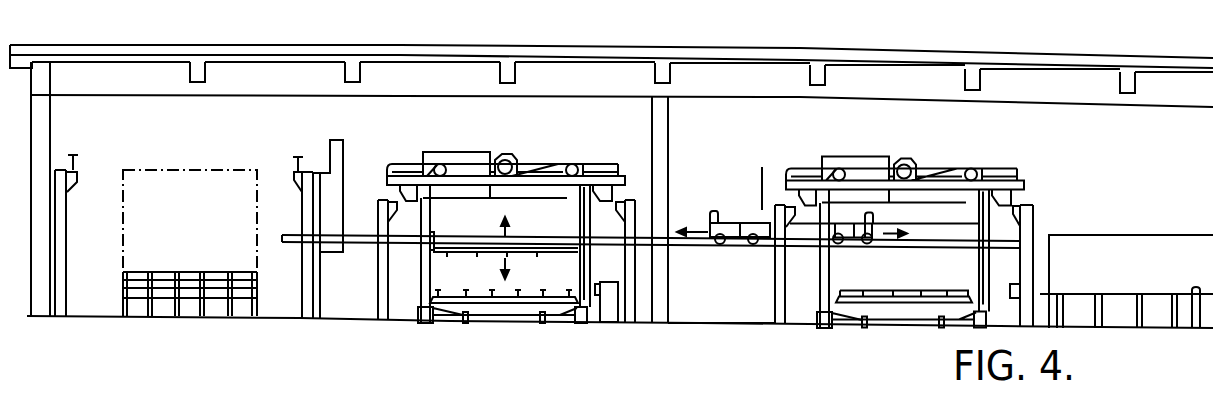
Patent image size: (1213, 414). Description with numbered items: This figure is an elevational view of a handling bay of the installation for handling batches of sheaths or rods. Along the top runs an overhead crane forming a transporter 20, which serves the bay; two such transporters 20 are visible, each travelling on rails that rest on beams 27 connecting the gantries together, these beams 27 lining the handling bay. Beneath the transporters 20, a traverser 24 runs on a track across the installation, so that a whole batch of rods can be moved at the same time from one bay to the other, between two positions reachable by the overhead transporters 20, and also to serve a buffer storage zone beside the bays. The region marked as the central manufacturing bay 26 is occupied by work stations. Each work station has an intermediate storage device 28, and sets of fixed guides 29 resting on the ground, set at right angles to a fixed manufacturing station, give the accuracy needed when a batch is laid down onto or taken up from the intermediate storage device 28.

The transporter 20 is at (556, 158).
The traverser 24 is at (709, 213).
The central manufacturing bay 26 is at (733, 296).
The beam 27 is at (772, 222).
The intermediate storage device 28 is at (890, 294).
The fixed guides 29 is at (422, 287).